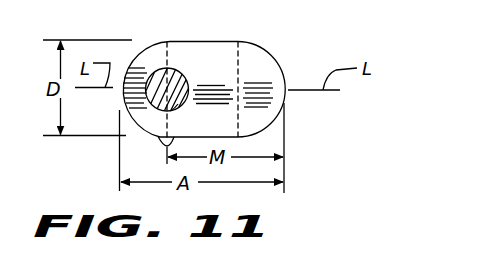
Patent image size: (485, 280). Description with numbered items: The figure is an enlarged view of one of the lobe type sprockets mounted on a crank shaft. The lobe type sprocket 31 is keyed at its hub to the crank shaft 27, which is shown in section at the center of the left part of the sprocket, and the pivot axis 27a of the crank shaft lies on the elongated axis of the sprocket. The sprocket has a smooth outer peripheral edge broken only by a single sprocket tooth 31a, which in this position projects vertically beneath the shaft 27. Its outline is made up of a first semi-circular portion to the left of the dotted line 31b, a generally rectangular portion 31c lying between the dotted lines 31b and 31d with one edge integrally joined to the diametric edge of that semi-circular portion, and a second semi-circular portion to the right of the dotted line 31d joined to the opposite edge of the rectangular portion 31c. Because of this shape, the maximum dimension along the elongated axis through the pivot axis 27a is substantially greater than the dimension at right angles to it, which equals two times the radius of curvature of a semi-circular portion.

The crank shaft 27 is at (152, 72).
The pivot axis 27a is at (181, 104).
The lobe type sprocket 31 is at (263, 55).
The sprocket tooth 31a is at (162, 142).
The dotted line 31b is at (170, 54).
The rectangular portion 31c is at (198, 86).
The dotted line 31d is at (243, 53).